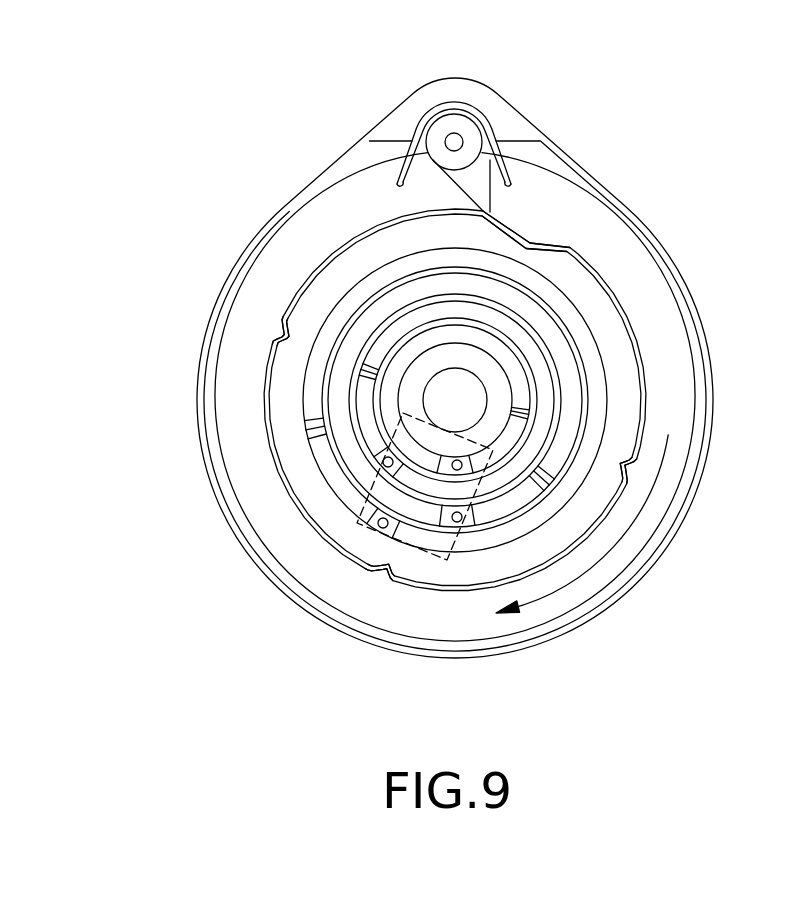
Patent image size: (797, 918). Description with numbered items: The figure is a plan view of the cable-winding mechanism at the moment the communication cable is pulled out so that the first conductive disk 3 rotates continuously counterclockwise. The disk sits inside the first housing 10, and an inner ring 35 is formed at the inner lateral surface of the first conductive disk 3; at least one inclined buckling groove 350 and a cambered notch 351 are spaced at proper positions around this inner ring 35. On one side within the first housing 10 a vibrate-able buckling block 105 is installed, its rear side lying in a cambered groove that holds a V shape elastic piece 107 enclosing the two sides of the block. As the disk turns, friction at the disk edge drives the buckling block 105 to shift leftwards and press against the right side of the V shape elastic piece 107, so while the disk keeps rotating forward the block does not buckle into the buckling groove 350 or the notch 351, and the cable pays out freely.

The first conductive disk 3 is at (640, 265).
The first housing 10 is at (593, 178).
The inner ring 35 is at (628, 323).
The buckling block 105 is at (477, 173).
The V shape elastic piece 107 is at (491, 131).
The inclined buckling groove 350 is at (280, 331).
The cambered notch 351 is at (529, 241).